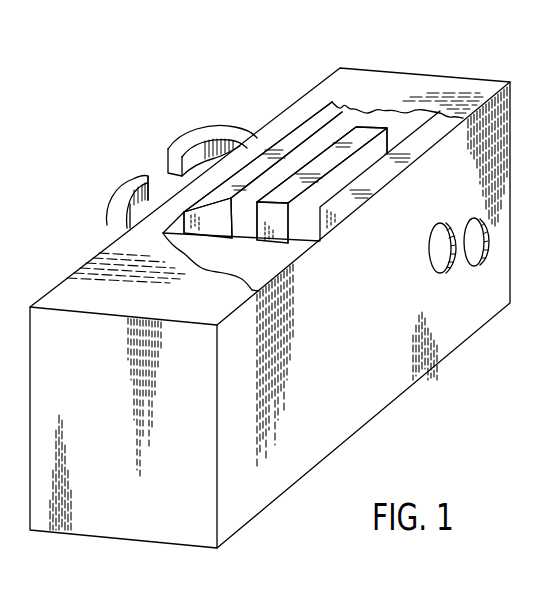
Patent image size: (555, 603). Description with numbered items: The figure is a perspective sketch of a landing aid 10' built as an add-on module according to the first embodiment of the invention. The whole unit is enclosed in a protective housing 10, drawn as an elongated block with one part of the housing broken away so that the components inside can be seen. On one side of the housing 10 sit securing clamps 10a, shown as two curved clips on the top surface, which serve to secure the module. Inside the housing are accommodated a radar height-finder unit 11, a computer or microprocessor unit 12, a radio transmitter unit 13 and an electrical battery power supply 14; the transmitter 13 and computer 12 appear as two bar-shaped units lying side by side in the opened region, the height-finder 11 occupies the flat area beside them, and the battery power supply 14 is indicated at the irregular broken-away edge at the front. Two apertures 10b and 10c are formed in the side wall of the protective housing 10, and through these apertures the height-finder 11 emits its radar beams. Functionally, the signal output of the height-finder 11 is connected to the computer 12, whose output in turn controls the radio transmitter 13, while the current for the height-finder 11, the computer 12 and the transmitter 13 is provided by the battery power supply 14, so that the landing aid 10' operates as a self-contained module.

The protective housing 10 is at (270, 326).
The securing clamps 10a is at (216, 130).
The aperture 10b is at (435, 270).
The aperture 10c is at (477, 218).
The landing aid 10' is at (444, 351).
The radar height-finder unit 11 is at (428, 133).
The computer or microprocessor unit 12 is at (363, 132).
The radio transmitter unit 13 is at (298, 138).
The electrical battery power supply 14 is at (200, 247).